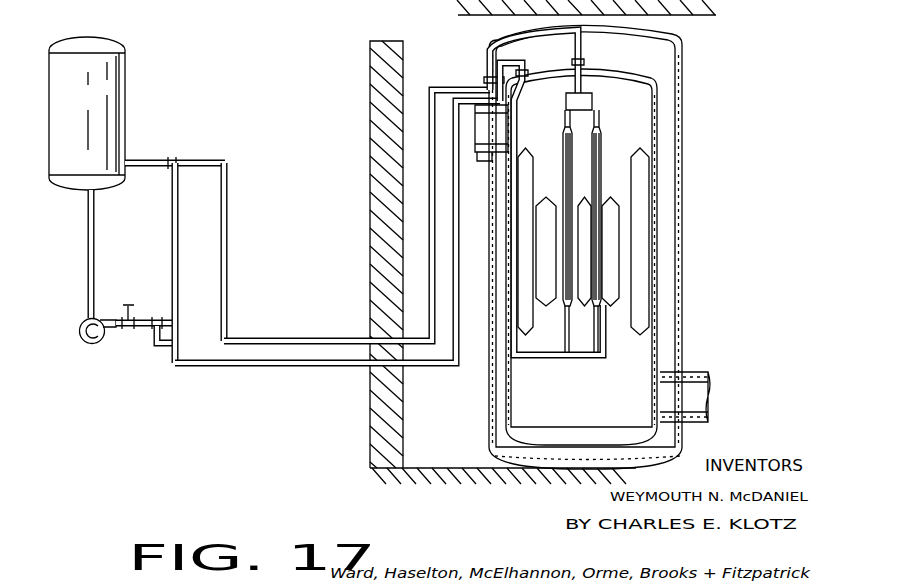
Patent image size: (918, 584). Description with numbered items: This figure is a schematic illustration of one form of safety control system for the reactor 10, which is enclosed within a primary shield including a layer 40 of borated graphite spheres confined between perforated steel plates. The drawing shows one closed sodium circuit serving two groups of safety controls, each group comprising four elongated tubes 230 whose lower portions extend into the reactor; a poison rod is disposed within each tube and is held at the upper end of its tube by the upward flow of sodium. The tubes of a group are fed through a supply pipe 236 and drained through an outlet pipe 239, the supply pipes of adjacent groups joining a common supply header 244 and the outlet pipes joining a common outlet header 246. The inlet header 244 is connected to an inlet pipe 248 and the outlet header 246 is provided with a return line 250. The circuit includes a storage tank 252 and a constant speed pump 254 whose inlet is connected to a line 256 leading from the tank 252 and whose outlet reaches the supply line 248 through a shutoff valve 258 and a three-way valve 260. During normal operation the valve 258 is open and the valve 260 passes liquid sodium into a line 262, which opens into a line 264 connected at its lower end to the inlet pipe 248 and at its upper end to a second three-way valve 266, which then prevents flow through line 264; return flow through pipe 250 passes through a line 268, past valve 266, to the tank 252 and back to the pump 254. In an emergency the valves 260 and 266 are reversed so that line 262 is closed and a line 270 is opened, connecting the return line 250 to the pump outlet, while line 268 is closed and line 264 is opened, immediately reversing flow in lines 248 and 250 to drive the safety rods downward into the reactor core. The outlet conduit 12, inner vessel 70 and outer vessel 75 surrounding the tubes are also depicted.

The reactor 10 is at (630, 313).
The outlet conduit 12 is at (657, 352).
The layer of borated graphite spheres 40 is at (383, 63).
The inner vessel 70 is at (655, 129).
The outer vessel 75 is at (680, 166).
The elongated tubes 230 is at (601, 152).
The supply pipe 236 is at (590, 340).
The outlet pipe 239 is at (568, 118).
The common supply header 244 is at (543, 362).
The common outlet header 246 is at (583, 47).
The inlet pipe 248 is at (273, 366).
The return line 250 is at (292, 338).
The storage tank 252 is at (122, 51).
The constant speed pump 254 is at (84, 342).
The line 256 is at (86, 222).
The shutoff valve 258 is at (127, 330).
The three-way valve 260 is at (153, 318).
The line 262 is at (166, 318).
The line 264 is at (170, 215).
The second three-way valve 266 is at (172, 160).
The line 268 is at (228, 220).
The line 270 is at (162, 348).